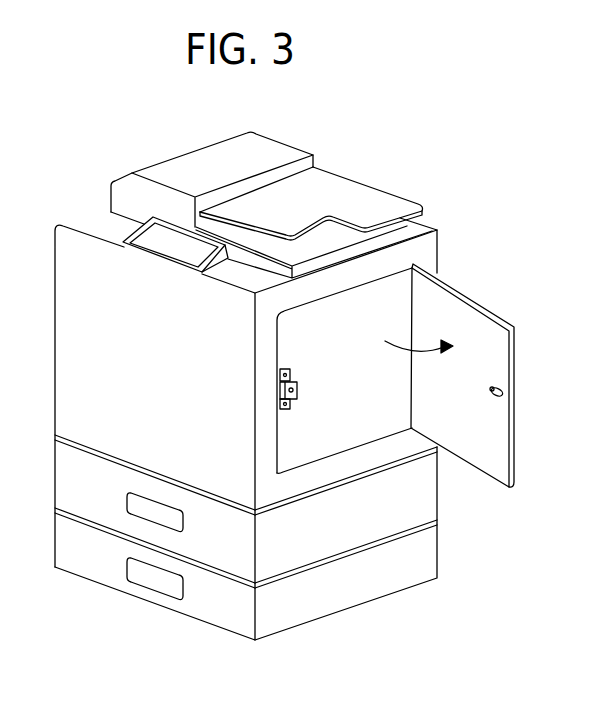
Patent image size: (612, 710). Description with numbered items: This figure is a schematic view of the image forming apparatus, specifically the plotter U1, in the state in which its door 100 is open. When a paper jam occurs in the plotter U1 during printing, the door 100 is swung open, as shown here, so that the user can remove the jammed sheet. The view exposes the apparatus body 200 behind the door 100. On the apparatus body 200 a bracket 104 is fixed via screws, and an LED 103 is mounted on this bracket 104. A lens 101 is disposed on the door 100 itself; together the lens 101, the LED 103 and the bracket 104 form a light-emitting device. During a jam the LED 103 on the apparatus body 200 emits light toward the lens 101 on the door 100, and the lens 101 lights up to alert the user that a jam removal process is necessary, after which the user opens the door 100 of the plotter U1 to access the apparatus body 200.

The plotter U1 is at (418, 263).
The door 100 is at (470, 302).
The lens 101 is at (500, 388).
The apparatus body 200 is at (283, 344).
The LED 103 is at (280, 387).
The bracket 104 is at (280, 411).